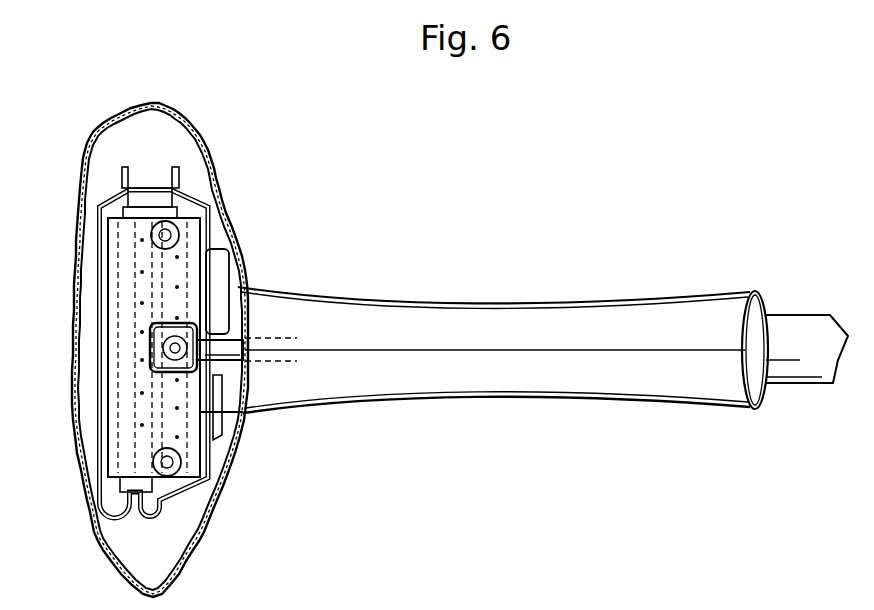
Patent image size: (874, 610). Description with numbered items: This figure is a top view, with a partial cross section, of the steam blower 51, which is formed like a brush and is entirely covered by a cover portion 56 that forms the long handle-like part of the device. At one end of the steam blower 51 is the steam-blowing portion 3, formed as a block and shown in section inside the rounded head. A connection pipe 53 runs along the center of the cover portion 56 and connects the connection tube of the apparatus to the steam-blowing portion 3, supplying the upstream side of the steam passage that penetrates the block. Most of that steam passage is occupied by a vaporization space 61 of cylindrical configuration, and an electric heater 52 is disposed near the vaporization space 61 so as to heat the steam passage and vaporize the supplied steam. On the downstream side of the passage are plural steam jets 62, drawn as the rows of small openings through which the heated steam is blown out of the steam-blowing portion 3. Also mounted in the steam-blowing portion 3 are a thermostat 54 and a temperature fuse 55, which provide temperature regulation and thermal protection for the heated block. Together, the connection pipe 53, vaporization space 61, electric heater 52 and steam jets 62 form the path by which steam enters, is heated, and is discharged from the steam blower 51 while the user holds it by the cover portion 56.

The steam-blowing portion 3 is at (148, 190).
The steam blower 51 is at (442, 305).
The electric heater 52 is at (118, 265).
The connection pipe 53 is at (207, 341).
The thermostat 54 is at (168, 207).
The temperature fuse 55 is at (213, 303).
The cover portion 56 is at (433, 380).
The vaporization space 61 is at (213, 277).
The steam jets 62 is at (140, 395).